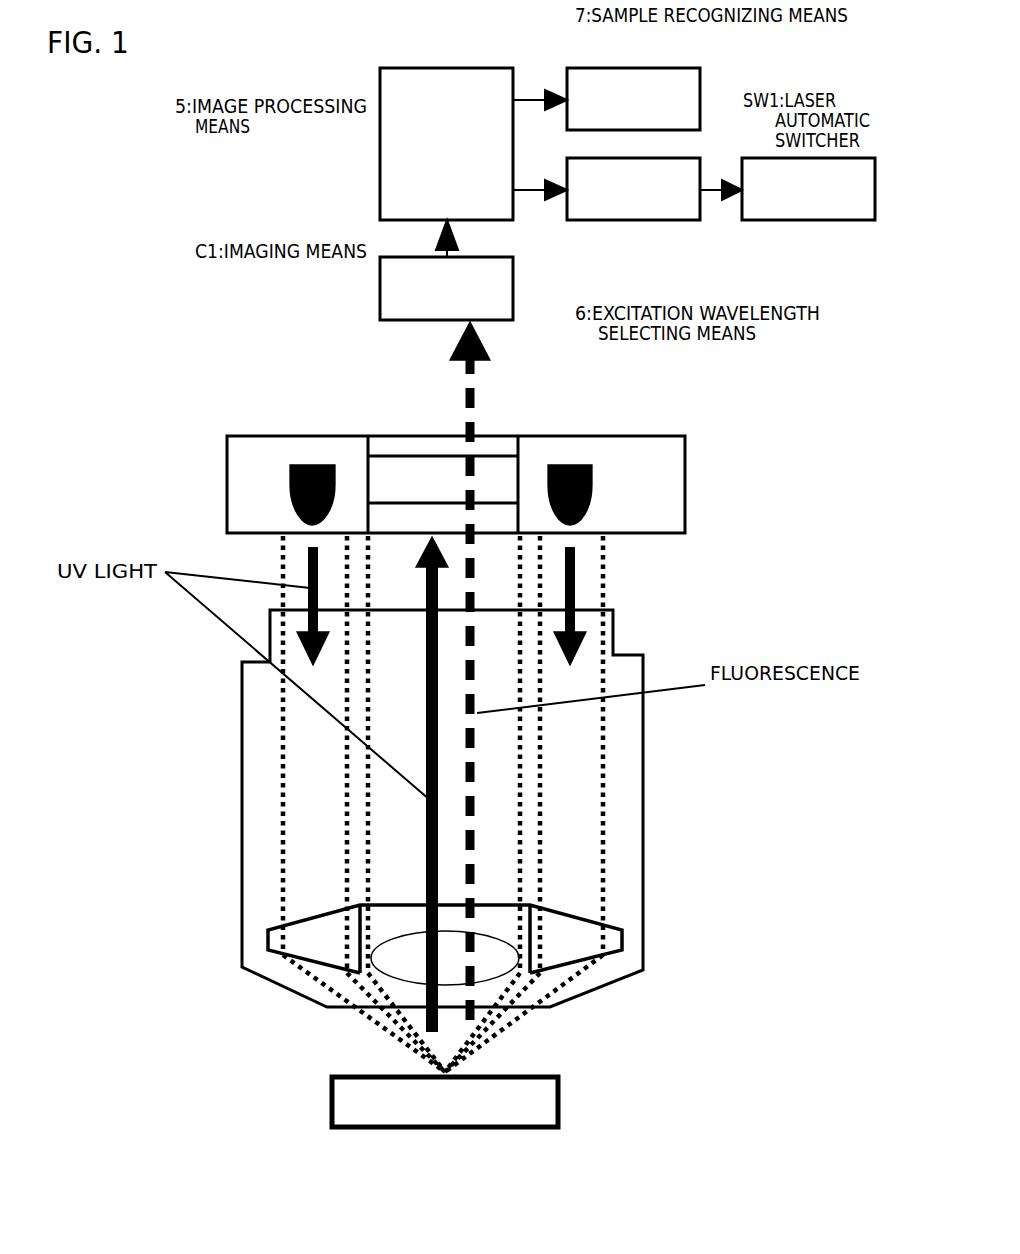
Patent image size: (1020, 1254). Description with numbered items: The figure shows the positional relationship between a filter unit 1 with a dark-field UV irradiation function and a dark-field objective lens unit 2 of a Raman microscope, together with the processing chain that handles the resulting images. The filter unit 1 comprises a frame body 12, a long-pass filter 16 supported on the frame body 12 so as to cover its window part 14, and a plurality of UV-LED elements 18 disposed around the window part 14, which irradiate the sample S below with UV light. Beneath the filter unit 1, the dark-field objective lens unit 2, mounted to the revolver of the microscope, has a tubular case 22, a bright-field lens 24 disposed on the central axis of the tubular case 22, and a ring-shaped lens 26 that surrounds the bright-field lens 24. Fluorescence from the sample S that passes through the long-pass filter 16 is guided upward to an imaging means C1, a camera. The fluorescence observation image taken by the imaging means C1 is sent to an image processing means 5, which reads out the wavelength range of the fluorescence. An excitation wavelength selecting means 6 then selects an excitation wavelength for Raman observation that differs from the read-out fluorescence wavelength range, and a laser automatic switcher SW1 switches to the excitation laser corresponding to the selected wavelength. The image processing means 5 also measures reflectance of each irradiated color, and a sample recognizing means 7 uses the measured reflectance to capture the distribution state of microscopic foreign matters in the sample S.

The filter unit 1 is at (170, 378).
The dark-field objective lens unit 2 is at (170, 890).
The image processing means 5 is at (380, 135).
The excitation wavelength selecting means 6 is at (633, 222).
The sample recognizing means 7 is at (637, 66).
The imaging means C1 is at (380, 280).
The laser automatic switcher SW1 is at (808, 222).
The frame body 12 is at (227, 482).
The window part 14 is at (370, 445).
The long-pass filter 16 is at (495, 450).
The UV-LED elements 18 is at (305, 465).
The tubular case 22 is at (242, 778).
The bright-field lens 24 is at (485, 988).
The ring-shaped lens 26 is at (603, 912).
The sample S is at (330, 1098).